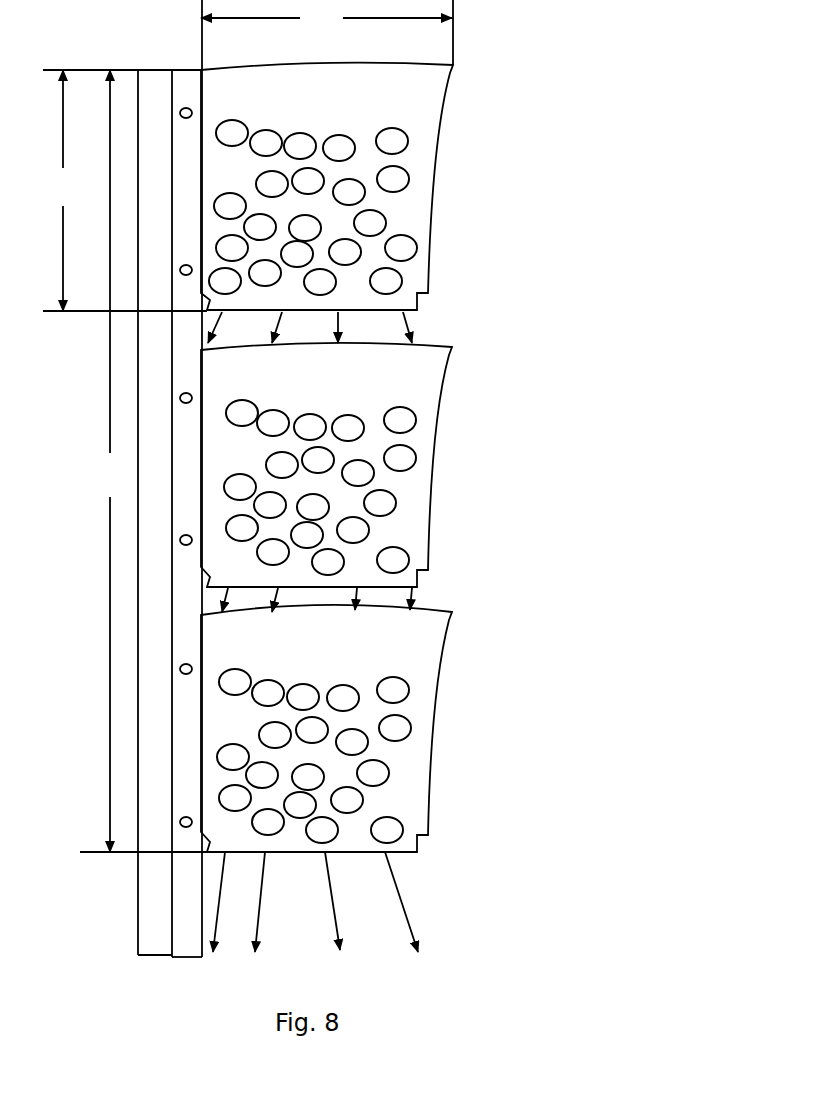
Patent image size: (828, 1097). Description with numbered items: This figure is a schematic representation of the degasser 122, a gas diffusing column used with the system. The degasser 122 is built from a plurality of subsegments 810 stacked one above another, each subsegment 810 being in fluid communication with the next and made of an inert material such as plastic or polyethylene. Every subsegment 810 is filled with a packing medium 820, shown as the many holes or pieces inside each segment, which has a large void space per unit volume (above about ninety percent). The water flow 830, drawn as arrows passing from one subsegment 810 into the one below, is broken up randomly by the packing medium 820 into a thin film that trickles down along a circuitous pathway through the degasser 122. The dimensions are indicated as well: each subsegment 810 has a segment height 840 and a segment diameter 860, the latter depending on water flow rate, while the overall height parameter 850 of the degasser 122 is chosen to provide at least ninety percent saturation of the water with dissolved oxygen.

The degasser 122 is at (633, 100).
The subsegment 810 is at (420, 108).
The packing medium 820 is at (403, 182).
The water flow 830 is at (408, 322).
The segment height 840 is at (124, 190).
The height parameter 850 is at (143, 461).
The segment diameter 860 is at (327, 32).